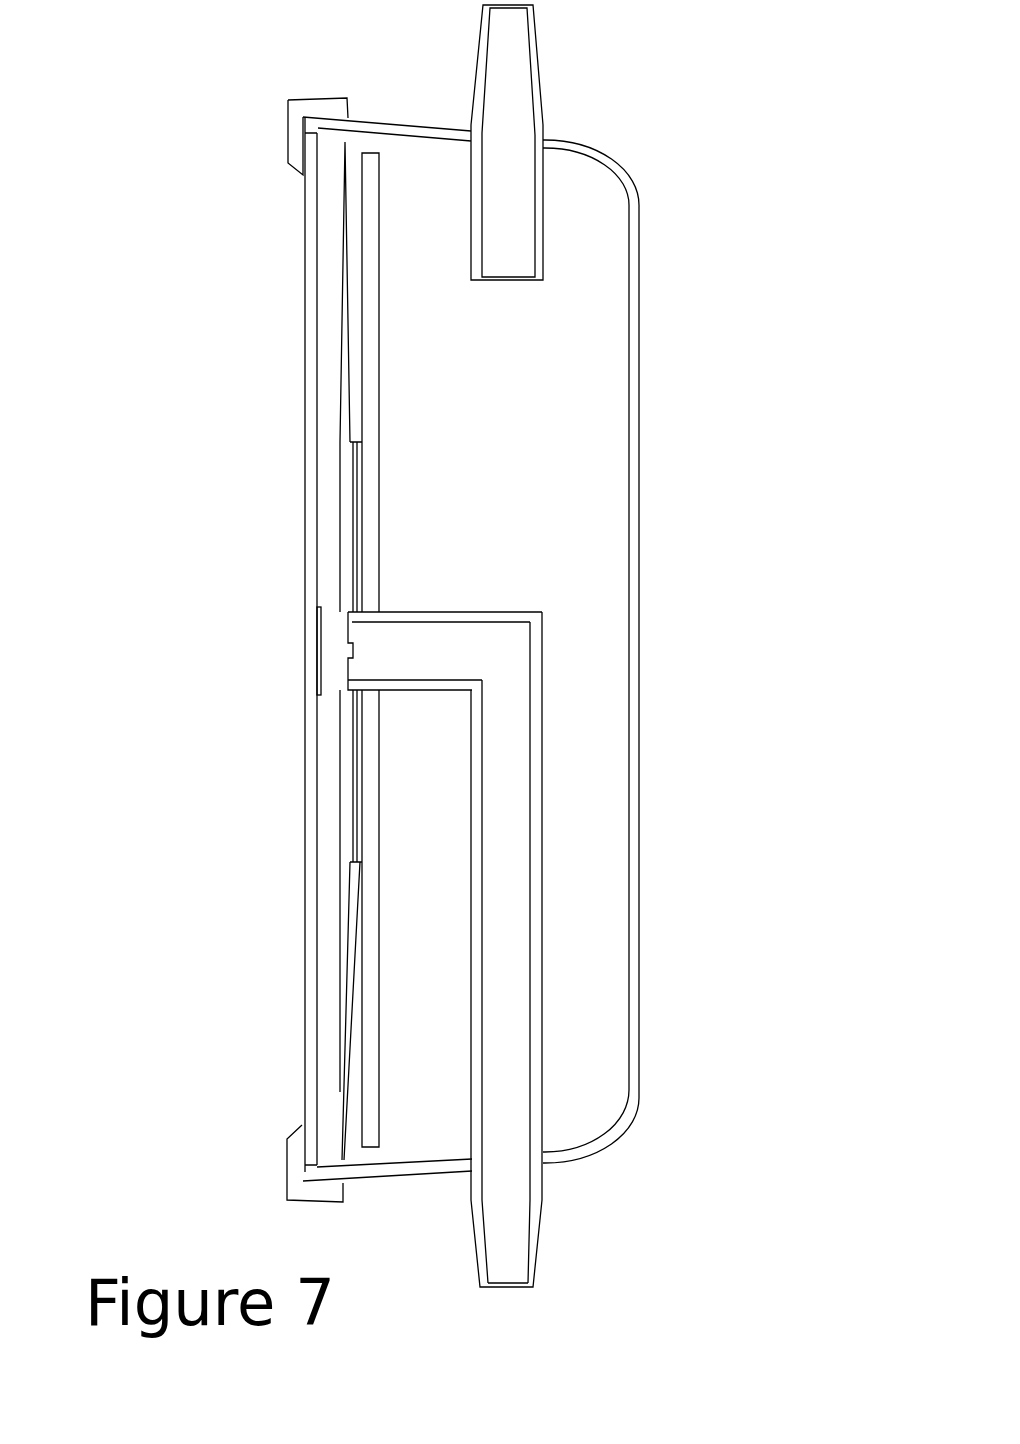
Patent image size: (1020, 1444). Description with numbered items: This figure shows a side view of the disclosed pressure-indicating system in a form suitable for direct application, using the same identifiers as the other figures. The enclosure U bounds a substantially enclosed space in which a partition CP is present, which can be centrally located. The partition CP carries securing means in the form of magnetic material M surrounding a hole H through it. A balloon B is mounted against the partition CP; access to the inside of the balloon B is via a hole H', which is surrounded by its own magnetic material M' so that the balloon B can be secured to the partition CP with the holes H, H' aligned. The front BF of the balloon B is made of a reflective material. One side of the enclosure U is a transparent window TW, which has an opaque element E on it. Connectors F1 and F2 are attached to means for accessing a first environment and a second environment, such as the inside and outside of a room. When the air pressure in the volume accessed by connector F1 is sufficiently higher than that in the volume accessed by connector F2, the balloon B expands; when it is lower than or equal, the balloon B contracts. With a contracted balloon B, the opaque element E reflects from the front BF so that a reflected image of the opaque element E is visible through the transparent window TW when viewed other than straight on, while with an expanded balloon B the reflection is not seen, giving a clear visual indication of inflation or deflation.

The connector F1 is at (540, 1205).
The connector F2 is at (543, 83).
The enclosure U is at (640, 988).
The transparent window TW is at (305, 922).
The opaque element E is at (314, 658).
The hole H is at (397, 581).
The hole H' is at (353, 719).
The partition CP is at (362, 253).
The front of the balloon BF is at (340, 362).
The balloon B is at (343, 1017).
The magnetic material M is at (276, 652).
The magnetic material M' is at (247, 652).